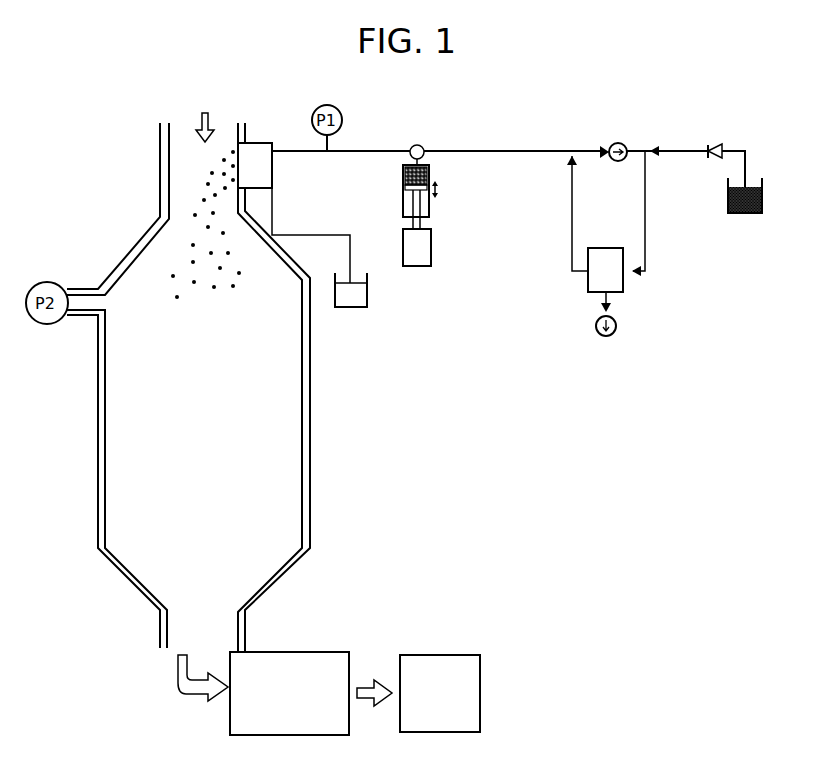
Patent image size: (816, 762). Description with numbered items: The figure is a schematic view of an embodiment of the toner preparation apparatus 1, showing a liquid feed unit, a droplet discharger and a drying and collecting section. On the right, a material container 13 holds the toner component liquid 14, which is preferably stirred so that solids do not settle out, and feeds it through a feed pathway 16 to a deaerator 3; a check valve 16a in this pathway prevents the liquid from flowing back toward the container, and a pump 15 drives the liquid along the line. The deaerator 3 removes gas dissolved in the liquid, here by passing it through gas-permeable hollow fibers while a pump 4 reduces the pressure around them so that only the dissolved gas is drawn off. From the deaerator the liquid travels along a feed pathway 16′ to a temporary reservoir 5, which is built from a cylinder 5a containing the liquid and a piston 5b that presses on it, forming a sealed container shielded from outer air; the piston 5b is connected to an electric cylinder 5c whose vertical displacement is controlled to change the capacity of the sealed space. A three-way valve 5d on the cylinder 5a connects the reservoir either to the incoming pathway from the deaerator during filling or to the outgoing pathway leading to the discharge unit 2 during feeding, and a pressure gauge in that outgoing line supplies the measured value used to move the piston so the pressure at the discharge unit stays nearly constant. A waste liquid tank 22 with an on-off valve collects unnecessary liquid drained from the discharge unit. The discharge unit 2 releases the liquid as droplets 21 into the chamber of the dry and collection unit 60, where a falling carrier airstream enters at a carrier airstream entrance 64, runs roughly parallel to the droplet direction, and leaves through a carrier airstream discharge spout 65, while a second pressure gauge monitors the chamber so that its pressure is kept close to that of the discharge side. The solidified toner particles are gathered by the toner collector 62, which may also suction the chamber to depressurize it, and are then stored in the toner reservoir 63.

The coating apparatus 1 is at (662, 93).
The discharge unit 2 is at (260, 142).
The deaerator 3 is at (608, 248).
The pump 4 is at (600, 338).
The temporary reservoir 5 is at (427, 212).
The cylinder 5a is at (428, 172).
The piston 5b is at (403, 195).
The electric cylinder 5c is at (431, 247).
The three-way valve 5d is at (417, 145).
The material container 13 is at (741, 214).
The toner component liquid 14 is at (752, 194).
The supply pump 15 is at (620, 143).
The feed pathway 16 is at (746, 150).
The check valve 16a is at (714, 141).
The feed pathway 16′ is at (493, 151).
The droplet 21 is at (216, 290).
The waste liquid tank 22 is at (368, 298).
The dry and collection unit 60 is at (311, 428).
The toner collector 62 is at (312, 652).
The toner reservoir 63 is at (455, 655).
The carrier airstream entrance 64 is at (183, 125).
The carrier airstream discharge spout 65 is at (180, 628).